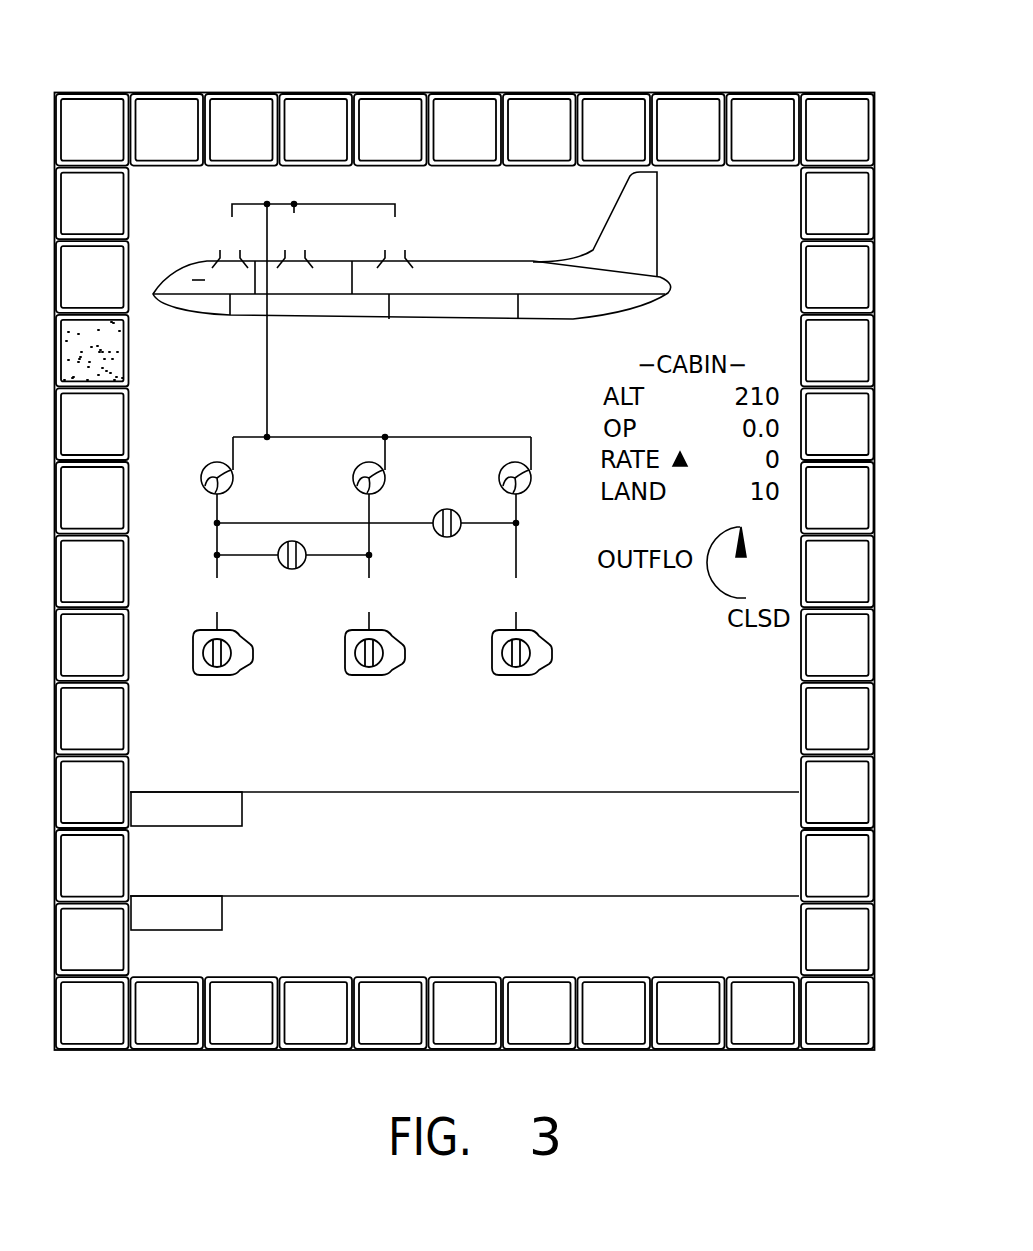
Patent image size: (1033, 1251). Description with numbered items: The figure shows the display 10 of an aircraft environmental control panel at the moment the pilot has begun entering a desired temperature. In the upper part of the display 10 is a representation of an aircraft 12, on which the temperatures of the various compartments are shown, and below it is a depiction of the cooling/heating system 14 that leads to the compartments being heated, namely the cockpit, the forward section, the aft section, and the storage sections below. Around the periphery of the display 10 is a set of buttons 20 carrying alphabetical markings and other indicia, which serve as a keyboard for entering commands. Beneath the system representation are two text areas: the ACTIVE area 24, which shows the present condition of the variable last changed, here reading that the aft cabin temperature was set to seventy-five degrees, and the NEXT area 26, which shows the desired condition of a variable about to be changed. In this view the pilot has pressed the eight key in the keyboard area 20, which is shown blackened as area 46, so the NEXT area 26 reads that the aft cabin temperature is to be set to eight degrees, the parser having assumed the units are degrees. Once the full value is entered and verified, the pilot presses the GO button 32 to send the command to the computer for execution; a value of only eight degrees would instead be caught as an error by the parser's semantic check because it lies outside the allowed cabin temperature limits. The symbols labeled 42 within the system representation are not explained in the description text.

The display 10 is at (385, 76).
The set of buttons 20 is at (649, 94).
The representation of an aircraft 12 is at (472, 262).
The cooling/heating system 14 is at (333, 414).
The pack compressor symbols 42 is at (405, 630).
The area in black 46 is at (132, 352).
The ACTIVE area 24 is at (660, 792).
The NEXT area 26 is at (660, 896).
The GO button 32 is at (836, 1050).